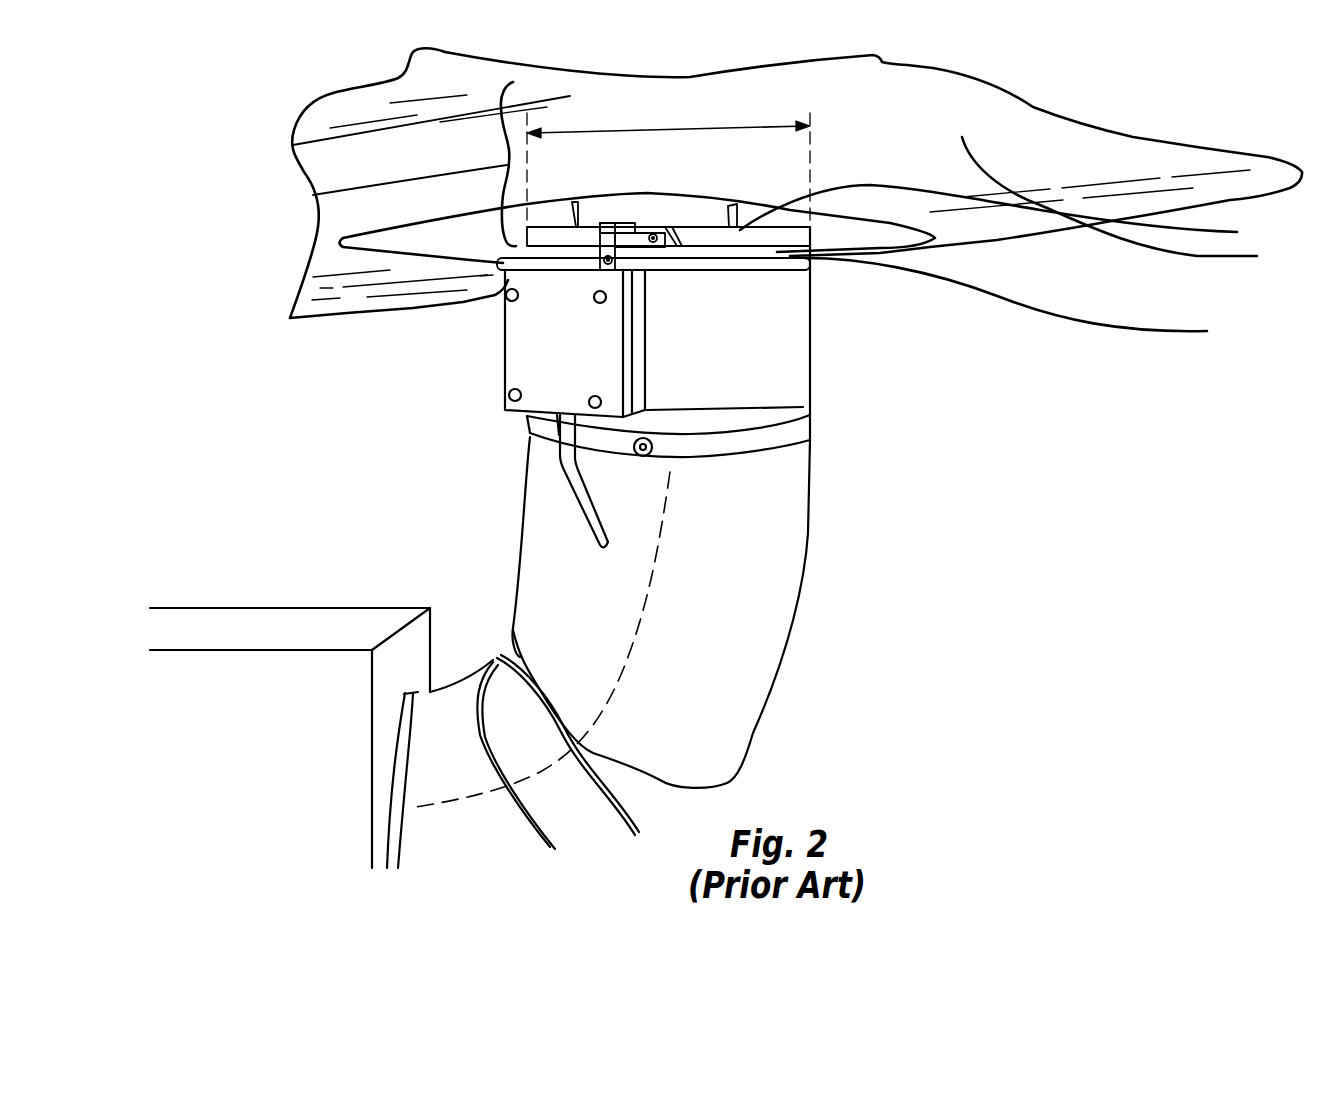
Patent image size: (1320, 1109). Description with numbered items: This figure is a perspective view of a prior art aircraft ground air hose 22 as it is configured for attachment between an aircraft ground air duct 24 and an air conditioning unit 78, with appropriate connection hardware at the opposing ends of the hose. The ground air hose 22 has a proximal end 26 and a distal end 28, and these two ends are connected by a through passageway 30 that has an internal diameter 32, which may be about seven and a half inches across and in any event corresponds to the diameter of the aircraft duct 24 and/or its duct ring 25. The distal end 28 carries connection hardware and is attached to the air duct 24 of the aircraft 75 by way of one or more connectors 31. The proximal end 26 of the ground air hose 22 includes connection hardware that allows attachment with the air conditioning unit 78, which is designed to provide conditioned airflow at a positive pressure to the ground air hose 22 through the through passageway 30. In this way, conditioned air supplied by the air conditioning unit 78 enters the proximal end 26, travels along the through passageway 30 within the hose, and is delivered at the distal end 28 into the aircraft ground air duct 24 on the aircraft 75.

The ground air hose 22 is at (550, 508).
The aircraft ground air duct 24 is at (313, 195).
The duct ring 25 is at (1131, 204).
The proximal end 26 is at (405, 692).
The distal end 28 is at (1022, 301).
The through passageway 30 is at (650, 588).
The connector 31 is at (600, 240).
The internal diameter 32 is at (663, 129).
The aircraft 75 is at (1007, 213).
The air conditioning unit 78 is at (237, 625).